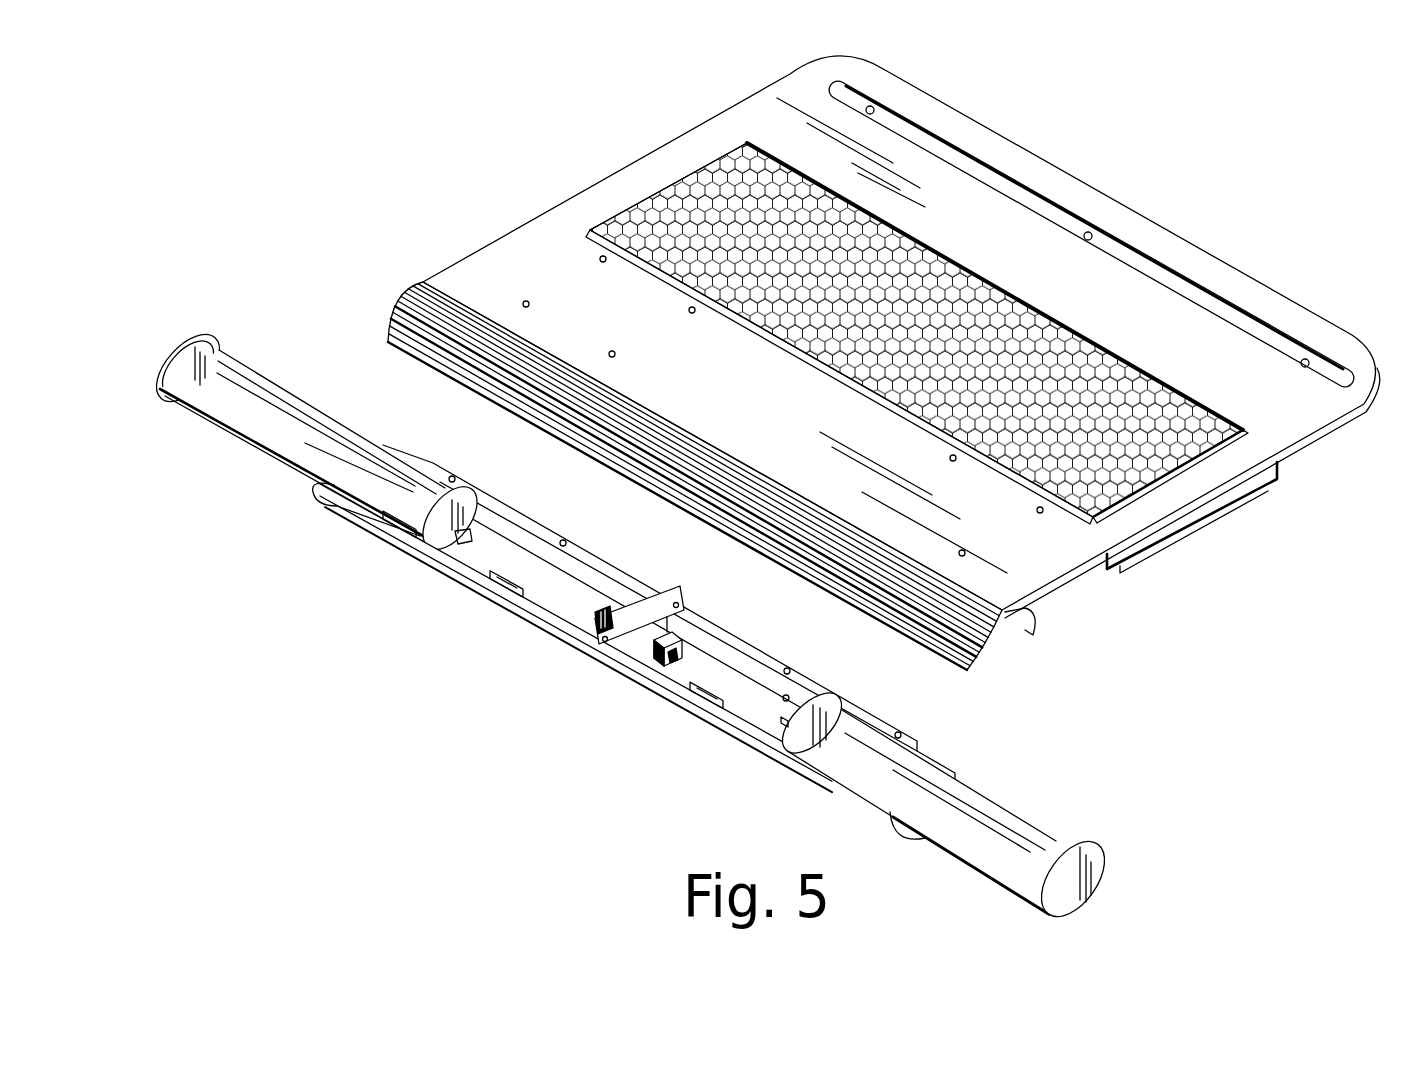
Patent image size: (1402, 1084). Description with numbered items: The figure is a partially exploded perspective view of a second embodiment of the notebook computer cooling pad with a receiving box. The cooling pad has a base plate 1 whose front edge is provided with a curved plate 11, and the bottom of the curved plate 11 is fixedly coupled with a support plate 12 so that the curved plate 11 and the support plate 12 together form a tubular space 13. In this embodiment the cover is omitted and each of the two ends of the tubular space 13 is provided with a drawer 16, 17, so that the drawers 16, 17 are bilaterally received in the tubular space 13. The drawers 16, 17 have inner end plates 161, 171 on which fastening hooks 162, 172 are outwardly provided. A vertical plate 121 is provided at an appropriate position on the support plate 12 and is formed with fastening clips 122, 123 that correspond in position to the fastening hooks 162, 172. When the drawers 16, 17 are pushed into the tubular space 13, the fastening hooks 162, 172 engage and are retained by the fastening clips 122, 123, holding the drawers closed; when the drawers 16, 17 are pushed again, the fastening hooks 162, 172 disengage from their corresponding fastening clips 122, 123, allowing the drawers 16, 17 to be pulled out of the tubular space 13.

The base plate 1 is at (513, 245).
The curved plate 11 is at (420, 348).
The support plate 12 is at (423, 548).
The tubular space 13 is at (698, 650).
The drawer 16 is at (1037, 842).
The inner end plate 161 is at (828, 710).
The fastening hook 162 is at (785, 696).
The drawer 17 is at (305, 425).
The inner end plate 171 is at (460, 544).
The fastening hook 172 is at (470, 533).
The vertical plate 121 is at (623, 640).
The fastening clip 122 is at (667, 665).
The fastening clip 123 is at (593, 630).